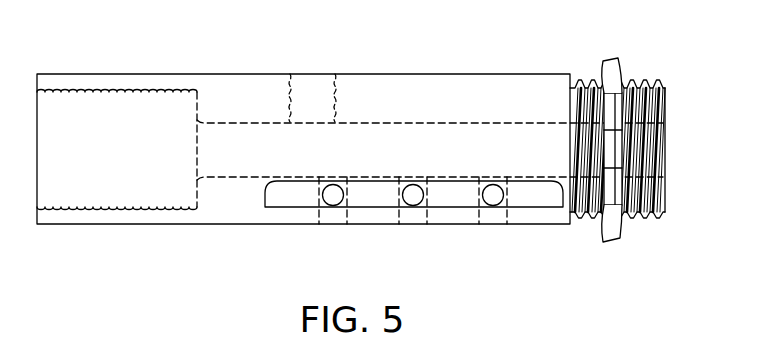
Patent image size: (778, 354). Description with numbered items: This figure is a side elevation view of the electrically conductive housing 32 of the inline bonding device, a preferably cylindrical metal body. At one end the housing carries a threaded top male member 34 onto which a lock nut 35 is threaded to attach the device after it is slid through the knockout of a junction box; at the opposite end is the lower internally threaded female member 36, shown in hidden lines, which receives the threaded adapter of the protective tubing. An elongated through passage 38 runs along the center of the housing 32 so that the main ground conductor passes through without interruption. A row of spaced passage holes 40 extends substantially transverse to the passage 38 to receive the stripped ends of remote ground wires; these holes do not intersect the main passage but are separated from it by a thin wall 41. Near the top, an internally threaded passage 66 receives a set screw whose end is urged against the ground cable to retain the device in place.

The electrically conductive housing 32 is at (380, 74).
The threaded top male member 34 is at (663, 190).
The lock nut 35 is at (608, 60).
The lower internally threaded female member 36 is at (113, 120).
The through passage 38 is at (463, 123).
The passage holes 40 is at (337, 200).
The thin wall 41 is at (328, 182).
The internally threaded passage 66 is at (296, 98).